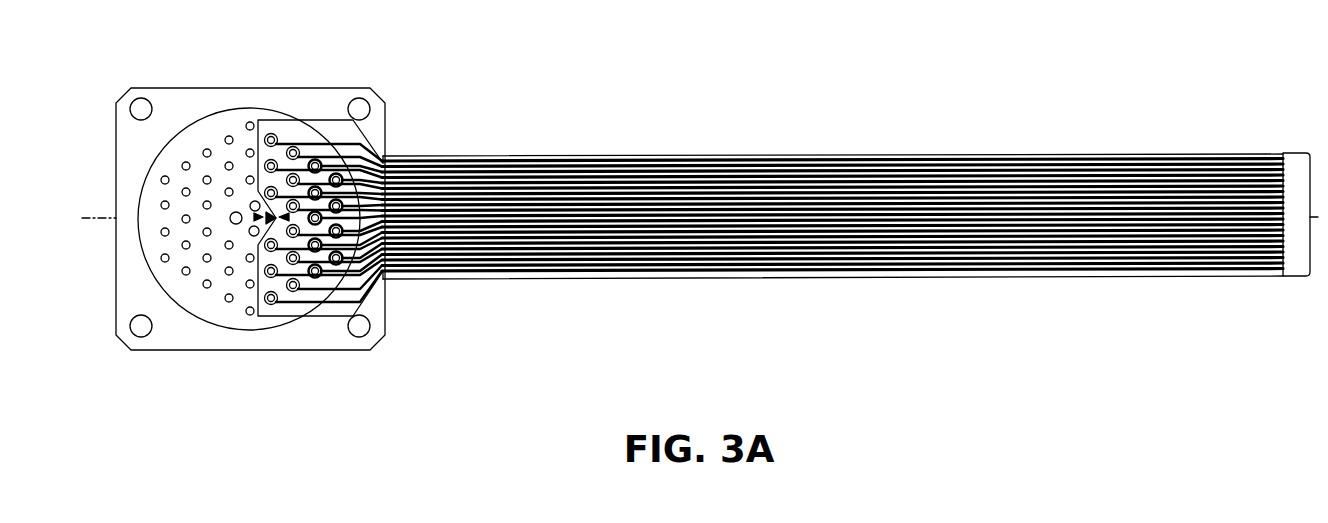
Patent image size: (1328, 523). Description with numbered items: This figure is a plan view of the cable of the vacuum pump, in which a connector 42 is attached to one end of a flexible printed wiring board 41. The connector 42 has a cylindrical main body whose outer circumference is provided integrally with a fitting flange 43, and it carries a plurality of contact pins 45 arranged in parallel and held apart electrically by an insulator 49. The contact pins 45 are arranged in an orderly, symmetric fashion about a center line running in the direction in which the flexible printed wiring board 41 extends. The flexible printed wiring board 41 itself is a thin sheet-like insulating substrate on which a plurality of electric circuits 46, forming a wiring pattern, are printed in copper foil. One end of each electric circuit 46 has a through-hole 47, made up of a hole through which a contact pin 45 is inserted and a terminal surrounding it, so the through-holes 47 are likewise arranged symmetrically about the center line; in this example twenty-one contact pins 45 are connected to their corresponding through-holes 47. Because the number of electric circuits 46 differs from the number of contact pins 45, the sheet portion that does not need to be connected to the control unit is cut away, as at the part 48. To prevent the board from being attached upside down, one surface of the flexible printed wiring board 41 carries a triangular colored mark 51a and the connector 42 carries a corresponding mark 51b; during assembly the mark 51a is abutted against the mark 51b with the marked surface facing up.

The flexible printed wiring board 41 is at (737, 148).
The connector 42 is at (146, 346).
The fitting flange 43 is at (323, 328).
The contact pin 45 is at (262, 126).
The electric circuit 46 is at (648, 157).
The through-hole 47 is at (265, 127).
The cut sheet section 48 is at (255, 218).
The insulator 49 is at (167, 178).
The mark 51a is at (282, 208).
The mark 51b is at (247, 209).